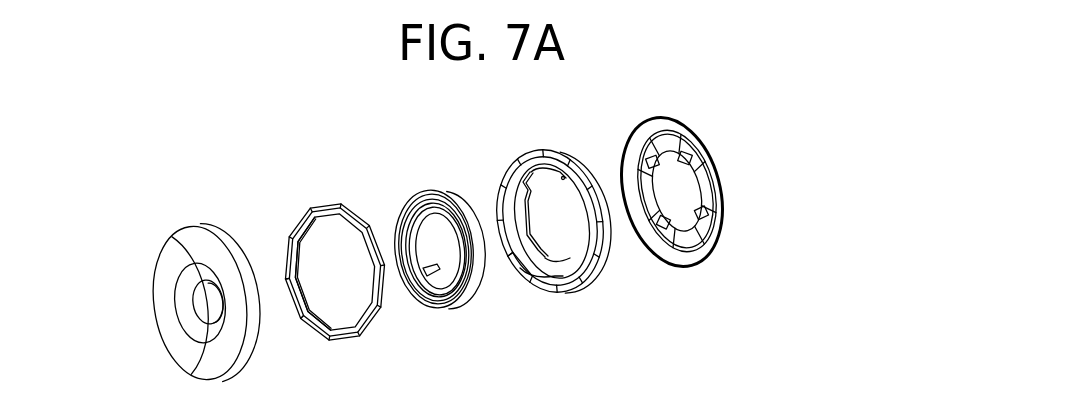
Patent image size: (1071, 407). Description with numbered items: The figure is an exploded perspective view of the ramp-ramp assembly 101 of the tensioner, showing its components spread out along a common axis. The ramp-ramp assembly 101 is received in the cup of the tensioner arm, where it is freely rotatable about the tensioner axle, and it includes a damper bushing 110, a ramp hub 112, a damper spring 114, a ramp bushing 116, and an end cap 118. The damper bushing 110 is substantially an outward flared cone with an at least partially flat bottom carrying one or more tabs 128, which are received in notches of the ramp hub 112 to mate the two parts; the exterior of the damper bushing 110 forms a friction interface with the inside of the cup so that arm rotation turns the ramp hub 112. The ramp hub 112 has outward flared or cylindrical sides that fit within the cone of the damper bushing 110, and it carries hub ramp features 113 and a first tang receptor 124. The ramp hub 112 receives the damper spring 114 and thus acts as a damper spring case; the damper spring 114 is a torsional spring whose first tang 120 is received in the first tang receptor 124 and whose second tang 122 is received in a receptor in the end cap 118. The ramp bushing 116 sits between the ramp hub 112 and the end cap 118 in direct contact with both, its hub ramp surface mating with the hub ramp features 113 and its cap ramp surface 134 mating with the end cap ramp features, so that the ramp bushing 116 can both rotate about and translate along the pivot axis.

The ramp-ramp assembly 101 is at (343, 92).
The damper bushing 110 is at (701, 160).
The ramp hub 112 is at (565, 209).
The hub ramp features 113 is at (580, 283).
The damper spring 114 is at (424, 242).
The ramp bushing 116 is at (317, 197).
The end cap 118 is at (194, 225).
The first tang 120 is at (420, 301).
The second tang 122 is at (434, 262).
The first tang receptor 124 is at (527, 281).
The tabs 128 is at (722, 193).
The cap ramp surface 134 is at (316, 334).